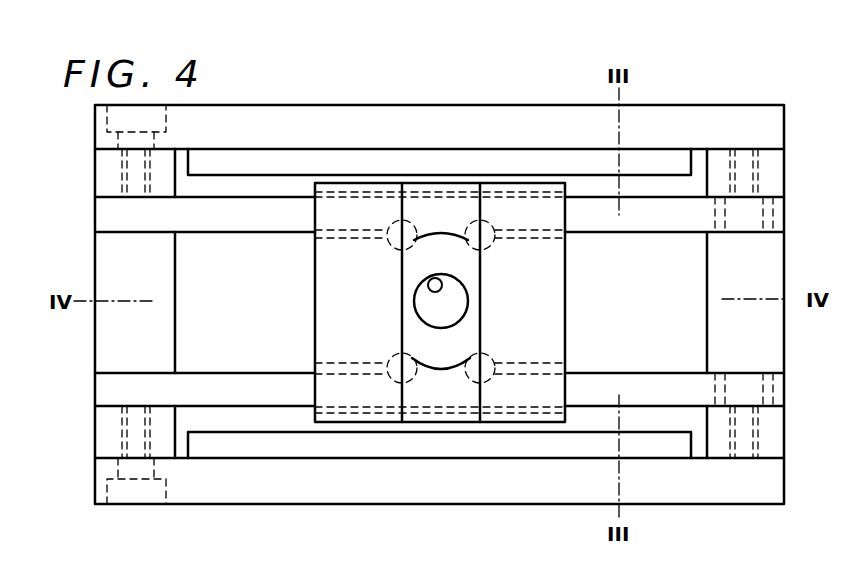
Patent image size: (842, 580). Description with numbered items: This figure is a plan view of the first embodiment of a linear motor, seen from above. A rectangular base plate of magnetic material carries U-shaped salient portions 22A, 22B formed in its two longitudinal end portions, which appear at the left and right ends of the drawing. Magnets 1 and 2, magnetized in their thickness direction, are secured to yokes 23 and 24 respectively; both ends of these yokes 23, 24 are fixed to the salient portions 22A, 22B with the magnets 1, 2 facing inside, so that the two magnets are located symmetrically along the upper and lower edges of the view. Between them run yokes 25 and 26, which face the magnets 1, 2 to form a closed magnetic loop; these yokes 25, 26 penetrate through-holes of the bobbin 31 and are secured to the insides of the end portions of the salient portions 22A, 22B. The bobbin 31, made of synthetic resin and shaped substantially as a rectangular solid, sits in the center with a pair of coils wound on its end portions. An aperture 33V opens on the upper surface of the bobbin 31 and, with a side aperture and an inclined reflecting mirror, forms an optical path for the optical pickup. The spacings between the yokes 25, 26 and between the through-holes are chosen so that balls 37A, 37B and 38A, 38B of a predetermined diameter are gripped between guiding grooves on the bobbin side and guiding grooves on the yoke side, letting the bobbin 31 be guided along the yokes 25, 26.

The magnet 1 is at (282, 447).
The magnet 2 is at (357, 158).
The yoke 23 is at (768, 478).
The yoke 24 is at (710, 114).
The salient portion 22A is at (110, 270).
The salient portion 22B is at (762, 268).
The yoke 25 is at (674, 383).
The yoke 26 is at (672, 217).
The bobbin 31 is at (433, 205).
The aperture 33V is at (436, 278).
The ball 37A is at (392, 358).
The ball 37B is at (493, 358).
The ball 38A is at (390, 245).
The ball 38B is at (492, 246).